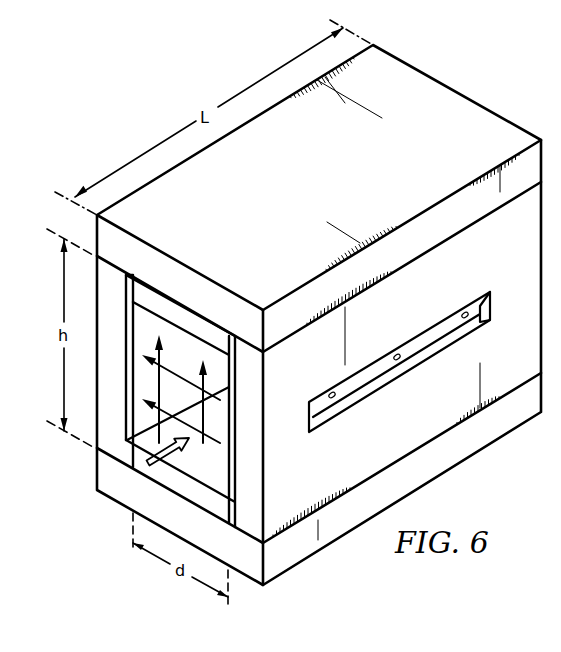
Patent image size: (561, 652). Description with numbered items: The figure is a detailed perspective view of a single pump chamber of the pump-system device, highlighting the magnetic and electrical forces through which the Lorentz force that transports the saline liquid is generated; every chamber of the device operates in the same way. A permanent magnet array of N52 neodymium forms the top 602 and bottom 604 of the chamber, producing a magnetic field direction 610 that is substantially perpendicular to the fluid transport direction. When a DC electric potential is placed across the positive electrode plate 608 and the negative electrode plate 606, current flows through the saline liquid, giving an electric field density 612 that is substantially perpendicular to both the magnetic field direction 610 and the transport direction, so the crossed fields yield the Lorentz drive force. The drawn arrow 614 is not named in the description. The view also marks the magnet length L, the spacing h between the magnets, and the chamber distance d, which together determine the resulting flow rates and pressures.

The top of the chamber 602 is at (212, 300).
The bottom of the chamber 604 is at (250, 565).
The negative electrode plate 606 is at (126, 310).
The positive electrode plate 608 is at (238, 470).
The magnetic field direction 610 is at (212, 366).
The electric field density 612 is at (147, 407).
The current direction arrow 614 is at (166, 456).